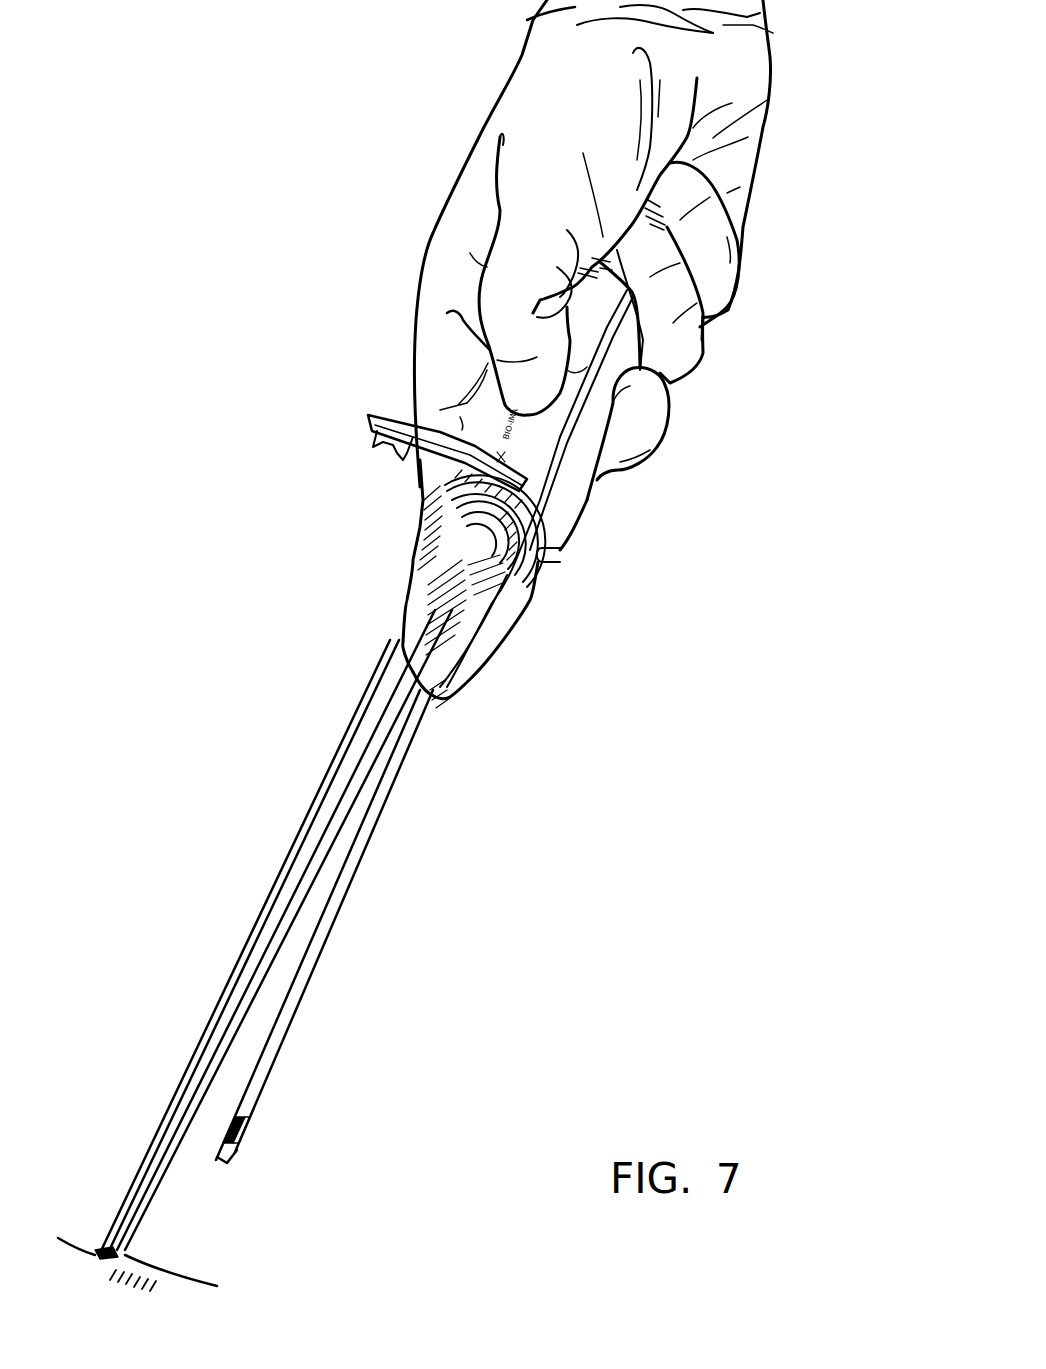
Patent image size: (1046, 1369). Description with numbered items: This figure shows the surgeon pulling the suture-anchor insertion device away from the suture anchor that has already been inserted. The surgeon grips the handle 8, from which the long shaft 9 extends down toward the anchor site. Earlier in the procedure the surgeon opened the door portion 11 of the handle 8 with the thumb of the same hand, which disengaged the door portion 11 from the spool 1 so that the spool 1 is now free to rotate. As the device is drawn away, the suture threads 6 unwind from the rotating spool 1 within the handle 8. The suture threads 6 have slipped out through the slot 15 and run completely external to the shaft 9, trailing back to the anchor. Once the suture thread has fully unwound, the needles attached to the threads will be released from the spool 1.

The spool 1 is at (427, 513).
The suture threads 6 is at (352, 717).
The handle 8 is at (570, 503).
The shaft 9 is at (365, 853).
The door portion 11 is at (402, 414).
The slot 15 is at (240, 1128).